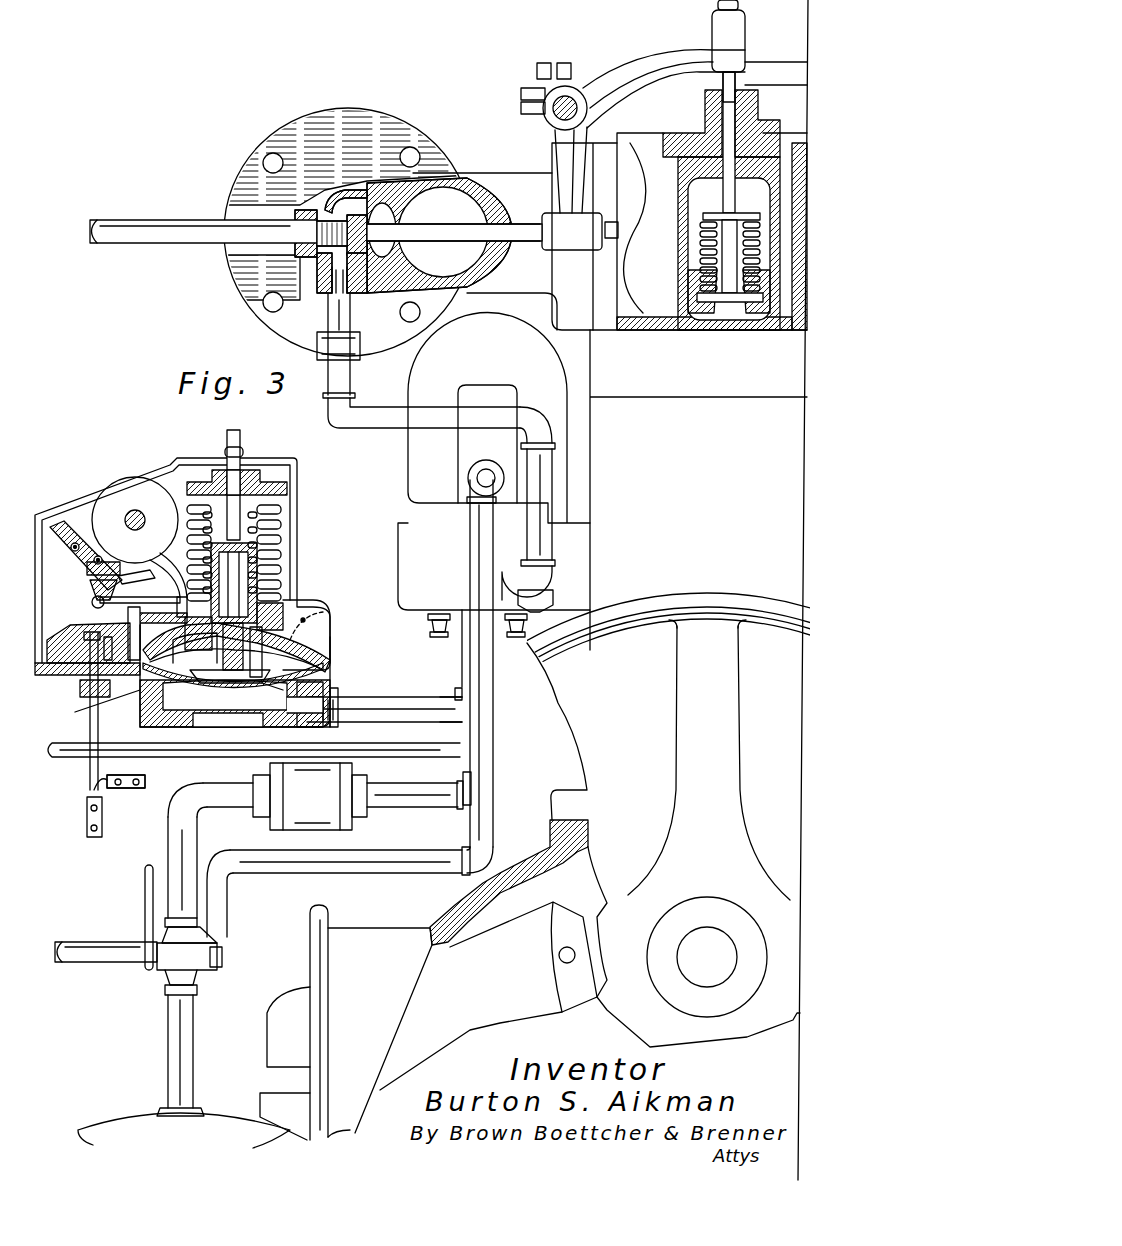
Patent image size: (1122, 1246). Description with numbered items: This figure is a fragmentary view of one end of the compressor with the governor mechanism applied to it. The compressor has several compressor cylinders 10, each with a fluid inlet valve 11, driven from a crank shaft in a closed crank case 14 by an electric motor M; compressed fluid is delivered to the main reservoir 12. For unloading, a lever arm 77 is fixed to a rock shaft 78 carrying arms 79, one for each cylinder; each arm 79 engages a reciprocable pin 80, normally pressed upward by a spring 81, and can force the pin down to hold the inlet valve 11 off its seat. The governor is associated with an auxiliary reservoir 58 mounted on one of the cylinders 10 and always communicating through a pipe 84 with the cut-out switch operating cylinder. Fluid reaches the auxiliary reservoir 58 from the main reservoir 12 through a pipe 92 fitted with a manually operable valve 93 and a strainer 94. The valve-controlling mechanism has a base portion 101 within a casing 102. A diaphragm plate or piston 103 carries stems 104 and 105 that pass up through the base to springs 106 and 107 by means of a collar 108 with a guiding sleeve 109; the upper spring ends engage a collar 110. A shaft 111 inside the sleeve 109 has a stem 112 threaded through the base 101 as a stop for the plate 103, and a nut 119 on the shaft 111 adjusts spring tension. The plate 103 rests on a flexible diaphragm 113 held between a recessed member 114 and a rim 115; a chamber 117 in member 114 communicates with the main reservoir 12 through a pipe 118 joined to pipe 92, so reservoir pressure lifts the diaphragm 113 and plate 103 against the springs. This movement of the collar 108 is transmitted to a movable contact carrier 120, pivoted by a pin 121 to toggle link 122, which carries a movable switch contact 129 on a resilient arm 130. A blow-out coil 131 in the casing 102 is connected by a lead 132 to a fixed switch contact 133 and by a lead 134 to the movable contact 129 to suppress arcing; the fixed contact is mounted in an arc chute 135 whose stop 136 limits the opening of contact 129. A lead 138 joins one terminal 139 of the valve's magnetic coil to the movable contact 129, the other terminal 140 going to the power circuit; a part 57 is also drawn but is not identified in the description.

The compressor cylinder 10 is at (680, 590).
The fluid inlet valve 11 is at (730, 322).
The main reservoir 12 is at (184, 1130).
The crank case 14 is at (462, 897).
The bracket 57 is at (458, 667).
The auxiliary reservoir 58 is at (340, 397).
The lever arm 77 is at (772, 70).
The rock shaft 78 is at (553, 113).
The arm 79 is at (648, 66).
The reciprocable pin 80 is at (700, 116).
The spring 81 is at (762, 120).
The pipe 84 is at (108, 962).
The pipe 92 is at (470, 571).
The manually operable valve 93 is at (210, 958).
The strainer 94 is at (303, 807).
The base portion 101 is at (283, 682).
The casing 102 is at (298, 530).
The diaphragm plate 103 is at (160, 716).
The stem 104 is at (323, 665).
The stem 105 is at (323, 678).
The spring 106 is at (283, 515).
The spring 107 is at (287, 485).
The collar 108 is at (283, 600).
The guiding sleeve 109 is at (283, 575).
The collar 110 is at (262, 478).
The shaft 111 is at (257, 556).
The stem 112 is at (262, 640).
The flexible diaphragm 113 is at (200, 683).
The recessed member 114 is at (180, 756).
The rim 115 is at (93, 706).
The chamber 117 is at (247, 728).
The pipe 118 is at (450, 724).
The nut 119 is at (246, 462).
The movable contact carrier 120 is at (170, 600).
The pin 121 is at (195, 649).
The toggle link 122 is at (330, 606).
The movable switch contact 129 is at (92, 592).
The resilient arm 130 is at (94, 606).
The blow-out coil 131 is at (135, 520).
The lead 132 is at (130, 579).
The fixed switch contact 133 is at (88, 570).
The lead 134 is at (160, 550).
The arc chute 135 is at (62, 530).
The stop 136 is at (90, 663).
The lead 138 is at (120, 788).
The terminal 139 is at (515, 638).
The terminal 140 is at (437, 637).
The electric motor M is at (707, 919).